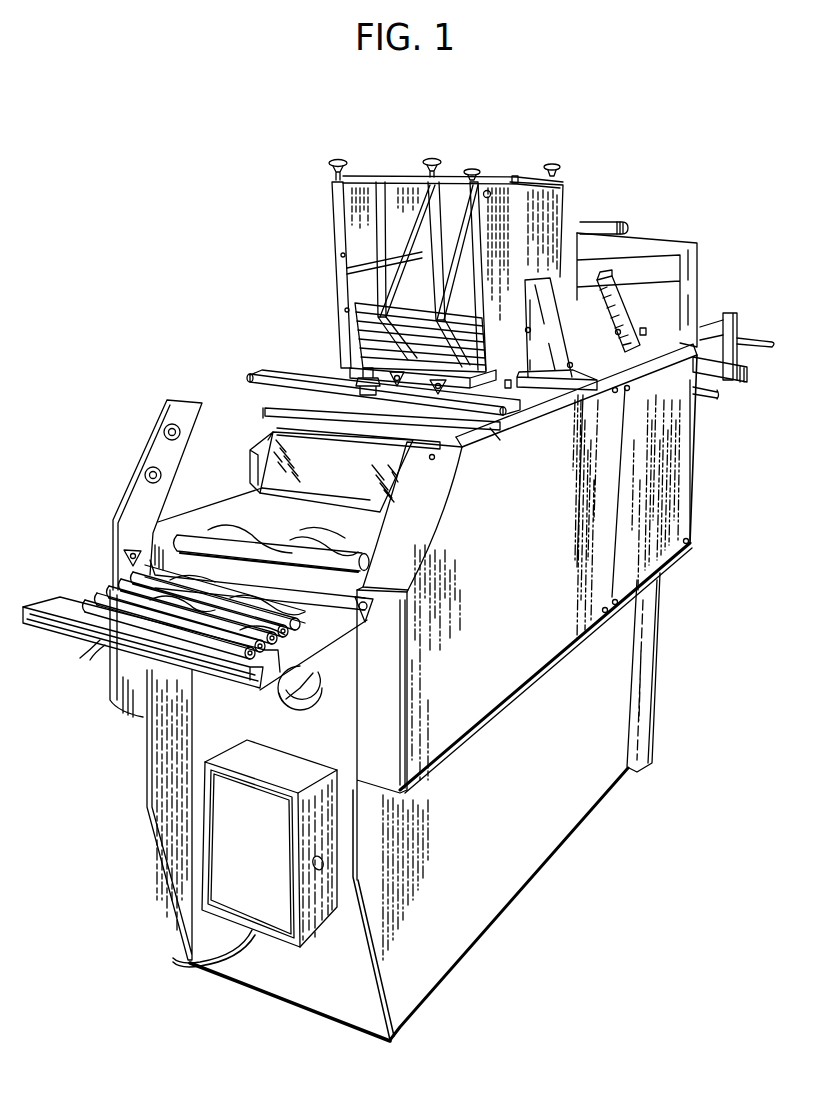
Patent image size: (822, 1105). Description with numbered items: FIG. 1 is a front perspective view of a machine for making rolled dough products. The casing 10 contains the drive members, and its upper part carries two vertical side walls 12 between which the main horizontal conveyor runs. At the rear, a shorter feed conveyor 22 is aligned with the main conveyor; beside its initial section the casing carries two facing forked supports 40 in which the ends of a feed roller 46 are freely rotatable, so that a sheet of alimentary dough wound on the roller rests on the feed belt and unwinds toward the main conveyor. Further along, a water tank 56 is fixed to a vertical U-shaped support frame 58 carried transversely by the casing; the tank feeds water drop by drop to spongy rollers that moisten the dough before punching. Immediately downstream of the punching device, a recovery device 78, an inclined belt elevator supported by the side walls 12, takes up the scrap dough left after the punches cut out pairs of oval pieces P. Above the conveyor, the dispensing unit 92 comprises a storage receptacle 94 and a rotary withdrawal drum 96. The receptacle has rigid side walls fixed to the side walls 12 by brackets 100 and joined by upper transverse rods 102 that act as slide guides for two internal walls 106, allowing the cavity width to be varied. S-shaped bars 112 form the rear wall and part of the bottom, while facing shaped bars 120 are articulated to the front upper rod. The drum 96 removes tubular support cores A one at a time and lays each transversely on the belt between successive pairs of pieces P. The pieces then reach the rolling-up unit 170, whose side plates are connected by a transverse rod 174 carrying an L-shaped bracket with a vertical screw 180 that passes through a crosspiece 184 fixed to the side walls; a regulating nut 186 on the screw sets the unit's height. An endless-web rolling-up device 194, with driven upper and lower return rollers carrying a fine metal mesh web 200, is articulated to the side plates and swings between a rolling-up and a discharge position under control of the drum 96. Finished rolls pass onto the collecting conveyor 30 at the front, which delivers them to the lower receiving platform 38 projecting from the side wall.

The casing 10 is at (617, 664).
The vertical side walls 12 is at (192, 400).
The feed conveyor 22 is at (715, 372).
The collecting conveyor 30 is at (235, 510).
The receiving platform 38 is at (327, 696).
The forked supports 40 is at (740, 323).
The feed roller 46 is at (712, 320).
The water tank 56 is at (613, 222).
The U-shaped support frame 58 is at (675, 240).
The recovery device 78 is at (580, 268).
The dispensing unit 92 is at (330, 243).
The storage receptacle 94 is at (395, 176).
The rotary withdrawal drum 96 is at (533, 190).
The brackets 100 is at (550, 373).
The upper transverse rods 102 is at (415, 185).
The internal walls 106 is at (345, 200).
The shaped bars 112 is at (518, 178).
The shaped bars 120 is at (347, 271).
The rolling-up unit 170 is at (277, 362).
The transverse rod 174 is at (463, 447).
The vertical screw 180 is at (363, 370).
The crosspiece 184 is at (262, 372).
The regulating nut 186 is at (450, 368).
The endless-web rolling-up device 194 is at (377, 523).
The endless web 200 is at (387, 477).
The tubular support cores A is at (468, 330).
The pieces P is at (328, 550).